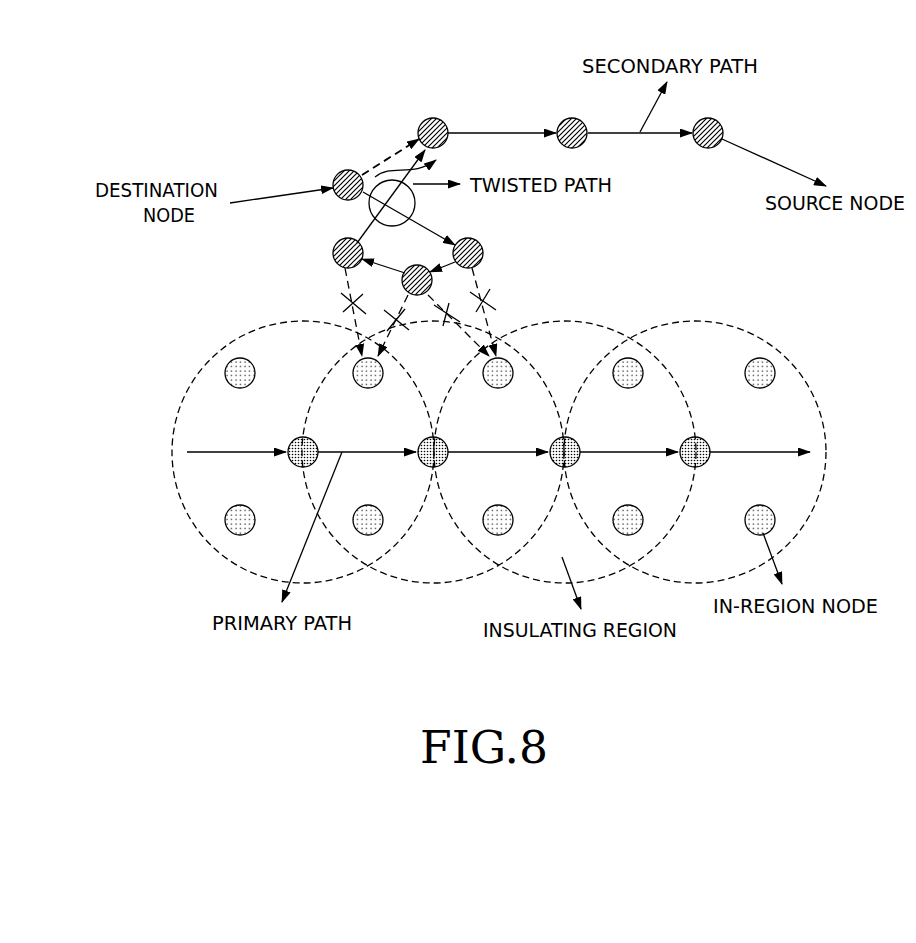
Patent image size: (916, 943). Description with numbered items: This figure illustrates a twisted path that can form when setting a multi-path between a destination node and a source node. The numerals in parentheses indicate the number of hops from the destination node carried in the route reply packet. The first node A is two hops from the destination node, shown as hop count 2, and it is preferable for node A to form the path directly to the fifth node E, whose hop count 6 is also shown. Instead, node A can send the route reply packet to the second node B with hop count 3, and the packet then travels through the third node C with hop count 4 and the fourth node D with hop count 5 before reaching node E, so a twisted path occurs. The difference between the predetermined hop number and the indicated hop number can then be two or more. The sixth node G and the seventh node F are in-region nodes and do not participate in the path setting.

The hop count of first node A 2 is at (341, 172).
The hop count of second node B 3 is at (489, 253).
The hop count of third node C 4 is at (398, 283).
The hop count of fourth node D 5 is at (325, 253).
The hop count of fifth node E 6 is at (430, 121).
The seventh node F is at (368, 385).
The sixth node G is at (498, 385).